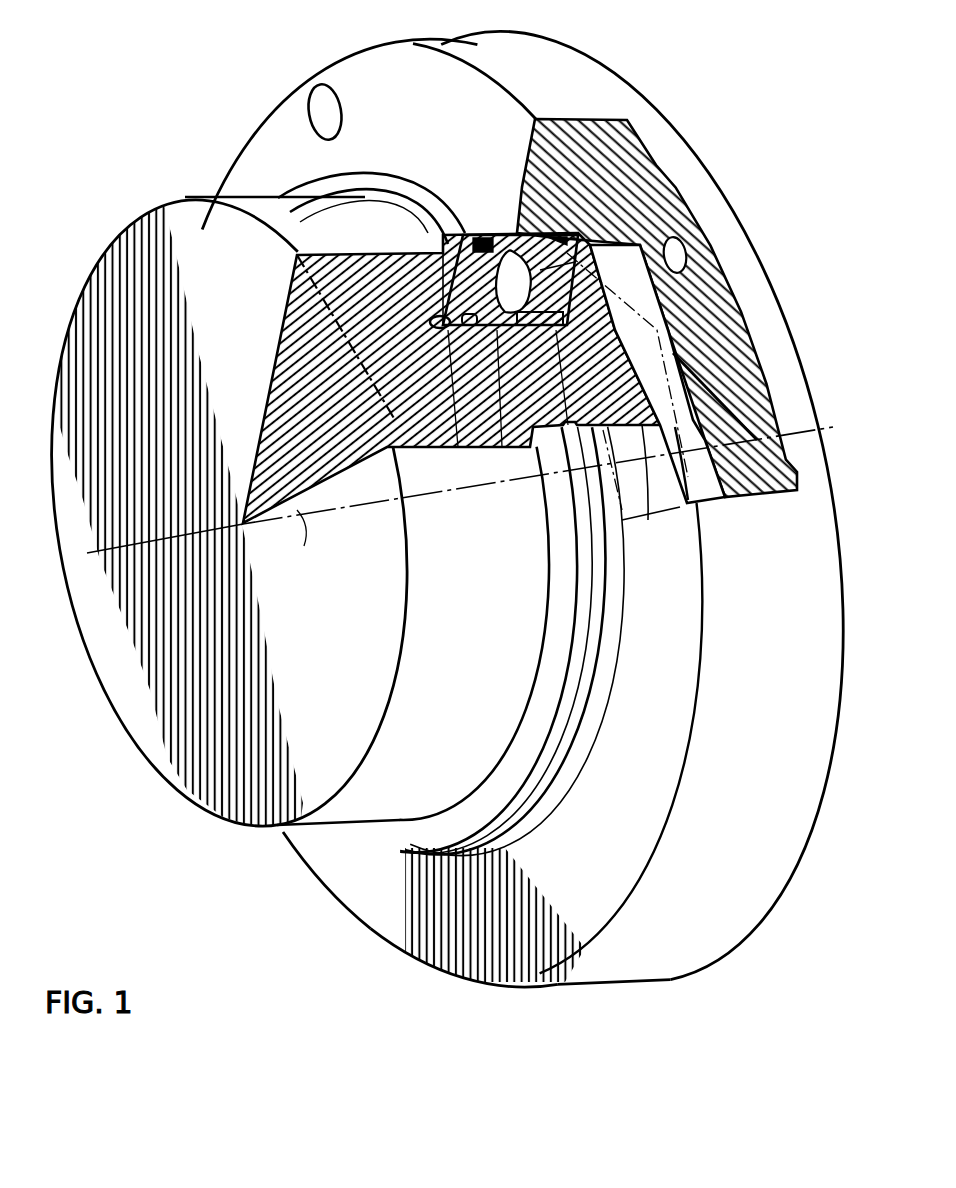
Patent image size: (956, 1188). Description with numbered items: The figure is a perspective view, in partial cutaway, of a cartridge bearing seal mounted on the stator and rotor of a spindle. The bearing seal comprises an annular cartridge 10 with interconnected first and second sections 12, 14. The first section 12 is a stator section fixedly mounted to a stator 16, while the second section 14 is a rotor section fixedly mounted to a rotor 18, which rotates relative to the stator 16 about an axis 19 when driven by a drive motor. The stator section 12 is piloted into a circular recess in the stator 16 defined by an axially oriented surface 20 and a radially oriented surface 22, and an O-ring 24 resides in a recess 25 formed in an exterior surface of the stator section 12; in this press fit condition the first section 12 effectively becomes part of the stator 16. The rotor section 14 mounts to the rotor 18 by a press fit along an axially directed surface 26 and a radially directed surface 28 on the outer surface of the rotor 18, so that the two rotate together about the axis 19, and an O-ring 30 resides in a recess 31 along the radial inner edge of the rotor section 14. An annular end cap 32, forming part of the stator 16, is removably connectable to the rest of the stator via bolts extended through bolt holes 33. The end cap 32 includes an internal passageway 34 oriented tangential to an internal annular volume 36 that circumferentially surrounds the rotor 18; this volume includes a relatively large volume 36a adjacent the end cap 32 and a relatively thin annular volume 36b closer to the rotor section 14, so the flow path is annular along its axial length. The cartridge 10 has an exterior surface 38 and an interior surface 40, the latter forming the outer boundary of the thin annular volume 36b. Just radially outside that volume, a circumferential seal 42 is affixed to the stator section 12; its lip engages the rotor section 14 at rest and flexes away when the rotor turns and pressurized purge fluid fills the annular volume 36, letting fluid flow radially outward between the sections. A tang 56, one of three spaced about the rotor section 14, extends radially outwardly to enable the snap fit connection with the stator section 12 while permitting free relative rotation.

The annular cartridge 10 is at (437, 169).
The first section 12 is at (577, 250).
The second section 14 is at (420, 206).
The stator 16 is at (598, 64).
The rotor 18 is at (251, 196).
The axis 19 is at (460, 493).
The axially oriented surface 20 is at (520, 262).
The radially oriented surface 22 is at (556, 270).
The O-ring 24 is at (560, 230).
The recess 25 is at (523, 223).
The axially directed surface 26 is at (430, 321).
The radially directed surface 28 is at (445, 247).
The O-ring 30 is at (462, 340).
The recess 31 is at (445, 296).
The annular end cap 32 is at (440, 110).
The bolt holes 33 is at (310, 105).
The internal passageway 34 is at (695, 362).
The internal annular volume 36 is at (708, 490).
The relatively large volume 36a is at (560, 282).
The relatively thin annular volume 36b is at (503, 342).
The exterior surface 38 is at (467, 200).
The interior surface 40 is at (548, 342).
The seal 42 is at (598, 345).
The tang 56 is at (505, 232).